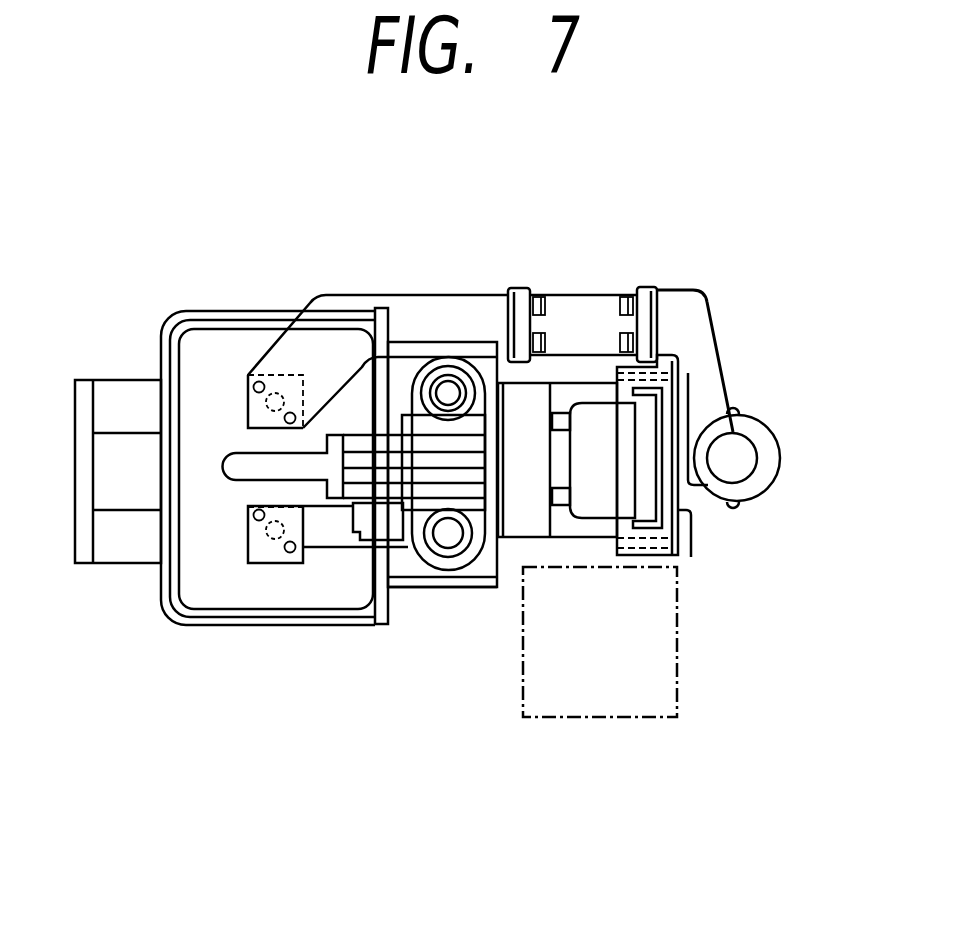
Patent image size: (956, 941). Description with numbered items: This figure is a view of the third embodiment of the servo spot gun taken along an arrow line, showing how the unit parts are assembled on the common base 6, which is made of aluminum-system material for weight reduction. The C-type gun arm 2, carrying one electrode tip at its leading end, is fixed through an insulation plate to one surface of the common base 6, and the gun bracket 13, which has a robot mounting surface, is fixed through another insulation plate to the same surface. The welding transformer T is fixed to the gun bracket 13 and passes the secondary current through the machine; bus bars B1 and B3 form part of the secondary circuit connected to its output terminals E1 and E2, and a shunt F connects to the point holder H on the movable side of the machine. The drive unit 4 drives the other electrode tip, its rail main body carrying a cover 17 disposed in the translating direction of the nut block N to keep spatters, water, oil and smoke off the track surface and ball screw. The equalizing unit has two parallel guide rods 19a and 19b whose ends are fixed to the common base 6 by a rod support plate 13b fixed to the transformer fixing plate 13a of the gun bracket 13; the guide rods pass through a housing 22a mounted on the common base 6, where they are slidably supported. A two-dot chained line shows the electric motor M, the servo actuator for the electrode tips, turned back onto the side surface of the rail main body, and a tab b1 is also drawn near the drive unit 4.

The gun bracket 13 is at (112, 393).
The gun arm 2 is at (227, 467).
The welding transformer T is at (215, 345).
The output terminal E1 is at (300, 373).
The output terminal E2 is at (265, 552).
The bus bar B1 is at (403, 310).
The housing 22a is at (432, 365).
The guide rod 19b is at (453, 387).
The guide rod 19a is at (447, 535).
The transformer fixing plate 13a is at (382, 602).
The rod support plate 13b is at (455, 587).
The shunt F is at (600, 307).
The bus bar B3 is at (682, 305).
The nut block N is at (668, 357).
The drive unit 4 is at (612, 440).
The terminal tab b1 is at (563, 505).
The common base 6 is at (527, 508).
The point holder H is at (747, 468).
The cover 17 is at (693, 512).
The servo motor M is at (613, 695).